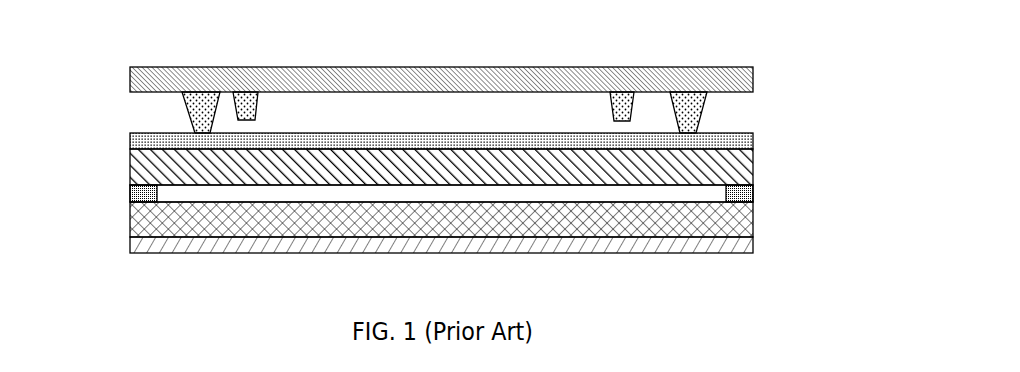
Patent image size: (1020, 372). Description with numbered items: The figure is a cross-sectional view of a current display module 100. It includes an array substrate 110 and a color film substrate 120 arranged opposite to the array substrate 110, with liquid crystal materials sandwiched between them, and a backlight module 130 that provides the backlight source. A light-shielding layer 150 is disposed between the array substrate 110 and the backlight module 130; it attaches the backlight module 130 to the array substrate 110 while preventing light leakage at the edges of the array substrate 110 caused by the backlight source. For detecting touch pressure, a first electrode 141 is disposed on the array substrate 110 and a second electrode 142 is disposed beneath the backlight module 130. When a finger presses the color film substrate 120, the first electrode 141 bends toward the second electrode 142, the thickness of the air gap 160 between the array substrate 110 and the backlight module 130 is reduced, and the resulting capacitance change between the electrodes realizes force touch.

The display module 100 is at (748, 40).
The array substrate 110 is at (135, 173).
The color film substrate 120 is at (130, 77).
The backlight module 130 is at (745, 225).
The first electrode 141 is at (745, 142).
The second electrode 142 is at (548, 250).
The light-shielding layer 150 is at (133, 201).
The gap 160 is at (697, 195).